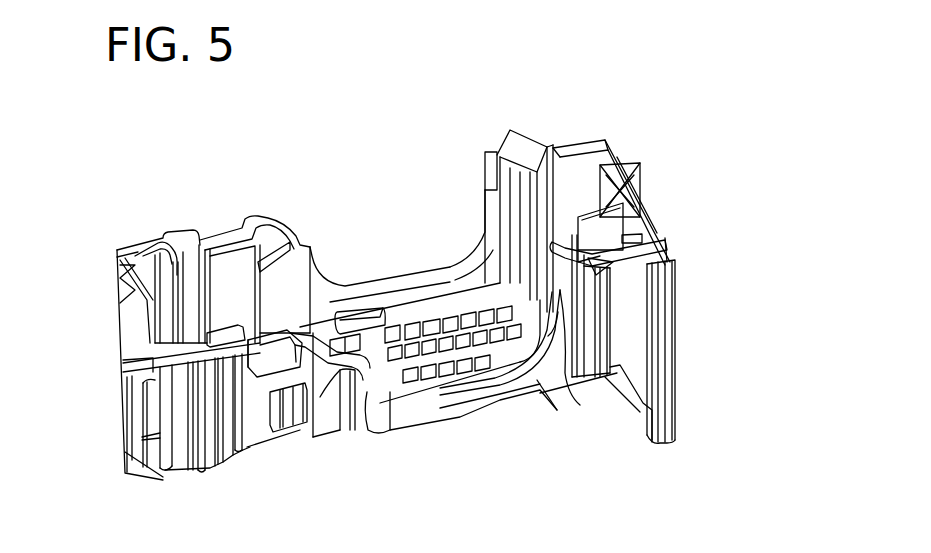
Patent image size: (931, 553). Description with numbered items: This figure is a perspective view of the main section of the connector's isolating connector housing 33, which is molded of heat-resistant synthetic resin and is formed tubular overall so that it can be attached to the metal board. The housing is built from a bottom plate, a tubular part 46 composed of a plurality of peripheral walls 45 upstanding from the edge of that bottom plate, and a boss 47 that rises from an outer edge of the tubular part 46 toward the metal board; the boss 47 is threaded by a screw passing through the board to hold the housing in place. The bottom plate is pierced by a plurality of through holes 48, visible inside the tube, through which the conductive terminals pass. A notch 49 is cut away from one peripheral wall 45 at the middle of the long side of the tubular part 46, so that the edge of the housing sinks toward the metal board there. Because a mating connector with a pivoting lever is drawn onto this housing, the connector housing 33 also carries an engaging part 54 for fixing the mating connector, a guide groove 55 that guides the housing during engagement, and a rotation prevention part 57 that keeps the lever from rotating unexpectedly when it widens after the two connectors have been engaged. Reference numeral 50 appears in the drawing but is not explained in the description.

The connector housing 33 is at (368, 146).
The peripheral wall 45 is at (512, 180).
The tubular part 46 is at (258, 224).
The boss 47 is at (490, 152).
The through hole 48 is at (430, 327).
The notch 49 is at (487, 235).
The rail curve 50 is at (358, 275).
The engaging part 54 is at (605, 170).
The guide groove 55 is at (168, 265).
The rotation prevention part 57 is at (562, 370).